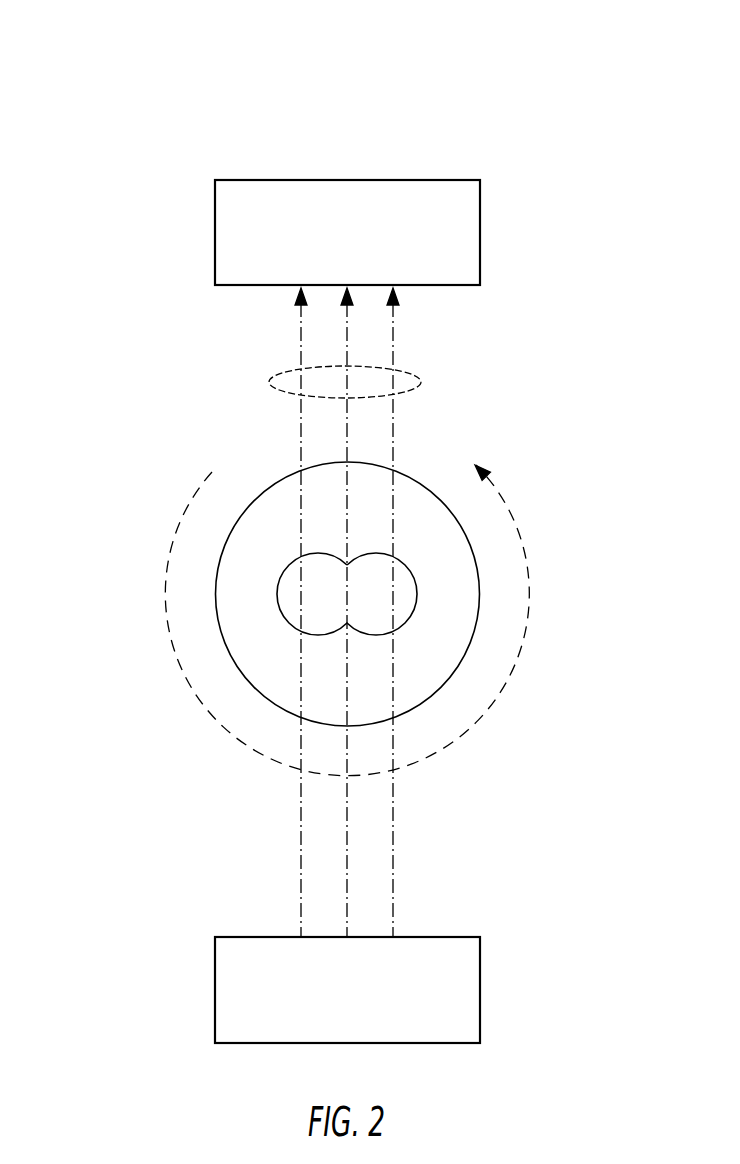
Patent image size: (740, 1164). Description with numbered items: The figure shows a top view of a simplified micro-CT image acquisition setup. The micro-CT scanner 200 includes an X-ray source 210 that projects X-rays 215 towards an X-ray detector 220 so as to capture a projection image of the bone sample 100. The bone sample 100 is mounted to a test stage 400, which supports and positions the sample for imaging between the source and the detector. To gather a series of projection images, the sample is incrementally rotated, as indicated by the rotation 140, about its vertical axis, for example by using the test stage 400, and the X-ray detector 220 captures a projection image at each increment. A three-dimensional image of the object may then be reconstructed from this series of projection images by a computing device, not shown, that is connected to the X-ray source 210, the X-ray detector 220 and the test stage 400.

The micro-CT scanner 200 is at (182, 97).
The X-ray source 210 is at (484, 1000).
The X-rays 215 is at (425, 382).
The X-ray detector 220 is at (484, 243).
The test stage 400 is at (484, 597).
The bone sample 100 is at (265, 594).
The incrementally rotating 140 is at (512, 693).